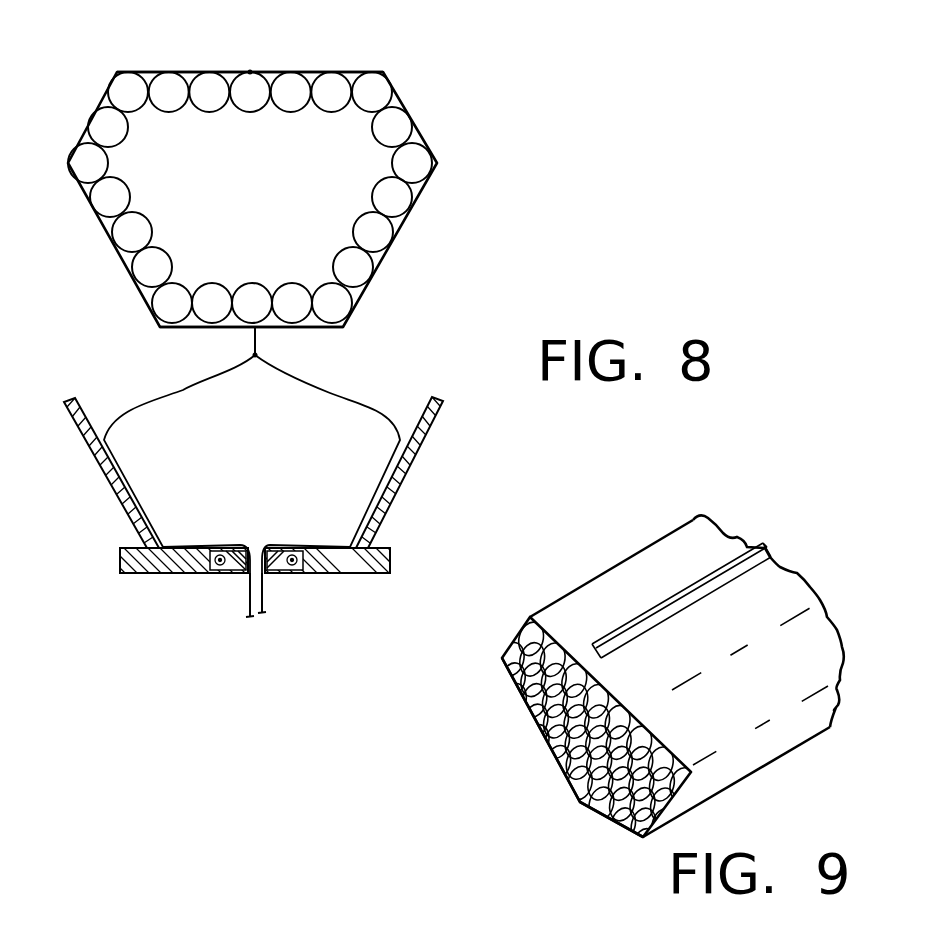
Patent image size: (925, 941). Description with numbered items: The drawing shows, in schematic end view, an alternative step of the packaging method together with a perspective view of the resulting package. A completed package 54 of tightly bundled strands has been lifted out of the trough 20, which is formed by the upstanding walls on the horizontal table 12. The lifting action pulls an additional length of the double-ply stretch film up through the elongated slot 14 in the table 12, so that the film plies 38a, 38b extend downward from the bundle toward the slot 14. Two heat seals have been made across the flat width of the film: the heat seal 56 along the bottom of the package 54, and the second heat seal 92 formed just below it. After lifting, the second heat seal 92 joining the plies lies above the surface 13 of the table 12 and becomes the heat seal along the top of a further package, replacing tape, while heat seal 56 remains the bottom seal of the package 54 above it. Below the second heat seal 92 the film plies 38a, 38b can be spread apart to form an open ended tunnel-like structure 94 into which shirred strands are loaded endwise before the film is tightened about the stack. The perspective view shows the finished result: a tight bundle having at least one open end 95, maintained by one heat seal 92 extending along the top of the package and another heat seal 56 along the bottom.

In FIG. 8, the package 54 is at (460, 246).
In FIG. 8, the second heat seal 92 is at (250, 72).
In FIG. 9, the second heat seal 92 is at (700, 580).
In FIG. 8, the heat seal 56 is at (250, 330).
In FIG. 9, the heat seal 56 is at (582, 812).
In FIG. 8, the trough 20 is at (97, 380).
In FIG. 8, the tunnel-like structure 94 is at (357, 400).
In FIG. 8, the film ply 38b is at (107, 467).
In FIG. 8, the film ply 38a is at (390, 463).
In FIG. 8, the table surface 13 is at (403, 507).
In FIG. 8, the table 12 is at (390, 553).
In FIG. 8, the slot 14 is at (262, 580).
In FIG. 9, the open end 95 is at (500, 773).